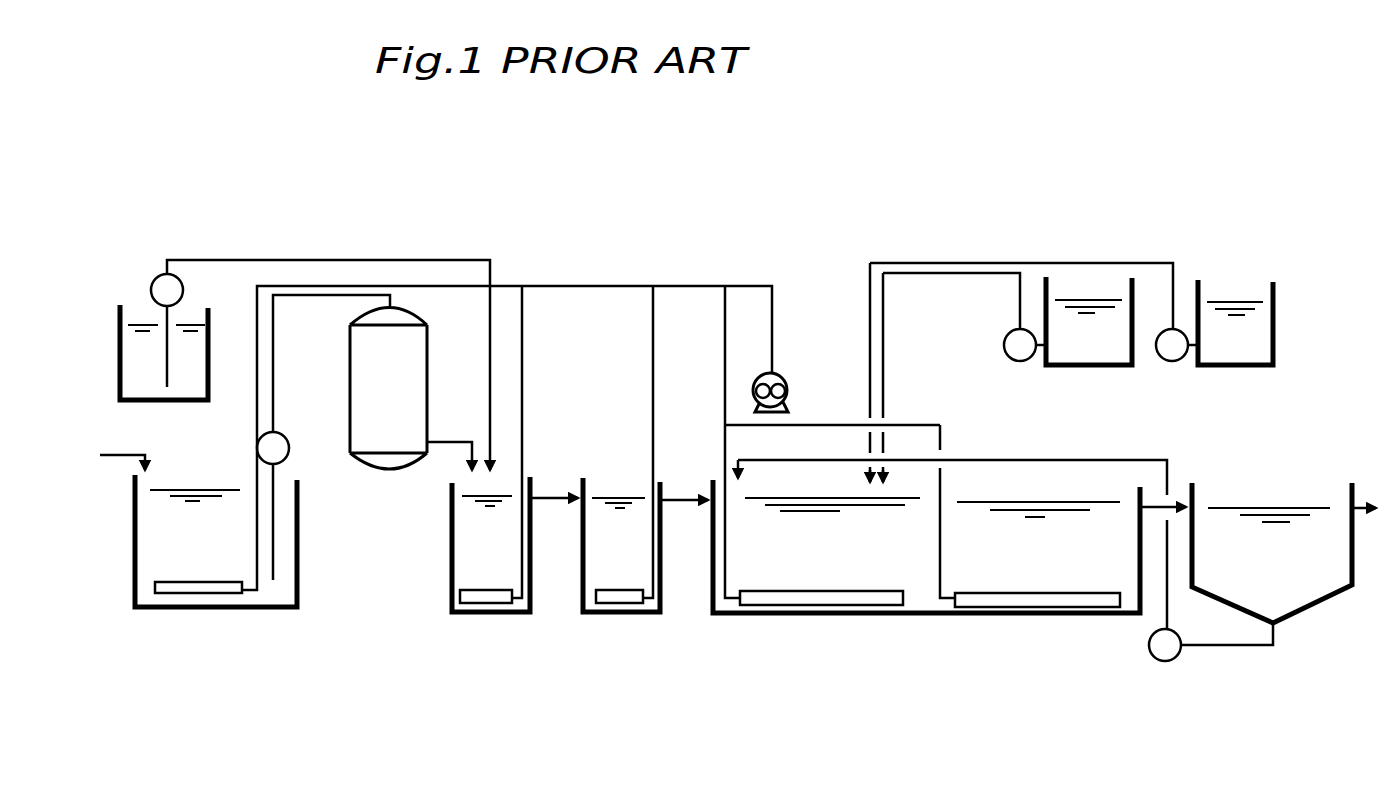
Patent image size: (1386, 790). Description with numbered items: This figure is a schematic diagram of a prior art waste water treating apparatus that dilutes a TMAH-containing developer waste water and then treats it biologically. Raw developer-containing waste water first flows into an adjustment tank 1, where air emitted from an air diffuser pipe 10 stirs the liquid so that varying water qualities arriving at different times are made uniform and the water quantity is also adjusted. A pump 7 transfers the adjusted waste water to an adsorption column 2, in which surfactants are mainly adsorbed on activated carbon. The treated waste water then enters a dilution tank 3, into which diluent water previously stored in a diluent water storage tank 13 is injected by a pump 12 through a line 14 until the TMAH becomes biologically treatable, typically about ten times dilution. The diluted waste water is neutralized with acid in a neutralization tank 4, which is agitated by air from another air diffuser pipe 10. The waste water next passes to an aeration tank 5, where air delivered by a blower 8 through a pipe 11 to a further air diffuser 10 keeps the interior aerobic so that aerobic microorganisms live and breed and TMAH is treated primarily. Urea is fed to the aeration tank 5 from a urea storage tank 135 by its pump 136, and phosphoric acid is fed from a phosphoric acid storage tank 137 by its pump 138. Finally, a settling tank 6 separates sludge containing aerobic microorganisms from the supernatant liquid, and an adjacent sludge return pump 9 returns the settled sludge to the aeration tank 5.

The adjustment tank 1 is at (160, 608).
The adsorption column 2 is at (388, 470).
The dilution tank 3 is at (450, 585).
The neutralization tank 4 is at (582, 585).
The aeration tank 5 is at (712, 590).
The settling tank 6 is at (1310, 607).
The pump 7 is at (290, 448).
The blower 8 is at (790, 392).
The sludge return pump 9 is at (1163, 661).
The air diffuser pipe 10 is at (218, 593).
The pipe 11 is at (692, 287).
The pump 12 is at (185, 288).
The diluent water storage tank 13 is at (208, 380).
The pipe 14 is at (403, 260).
The urea storage tank 135 is at (1085, 350).
The pump 136 is at (1013, 361).
The phosphoric acid storage tank 137 is at (1245, 355).
The pump 138 is at (1165, 361).